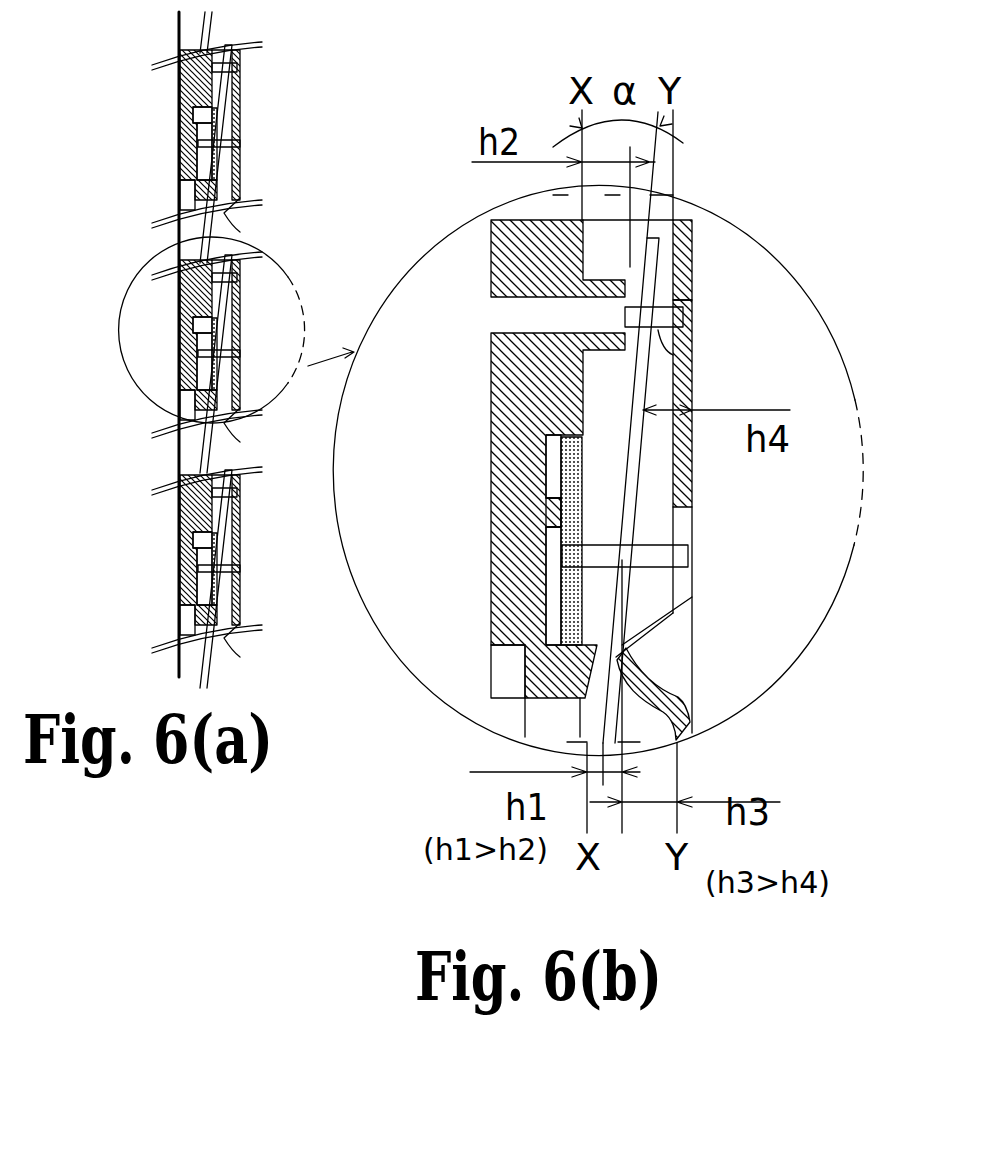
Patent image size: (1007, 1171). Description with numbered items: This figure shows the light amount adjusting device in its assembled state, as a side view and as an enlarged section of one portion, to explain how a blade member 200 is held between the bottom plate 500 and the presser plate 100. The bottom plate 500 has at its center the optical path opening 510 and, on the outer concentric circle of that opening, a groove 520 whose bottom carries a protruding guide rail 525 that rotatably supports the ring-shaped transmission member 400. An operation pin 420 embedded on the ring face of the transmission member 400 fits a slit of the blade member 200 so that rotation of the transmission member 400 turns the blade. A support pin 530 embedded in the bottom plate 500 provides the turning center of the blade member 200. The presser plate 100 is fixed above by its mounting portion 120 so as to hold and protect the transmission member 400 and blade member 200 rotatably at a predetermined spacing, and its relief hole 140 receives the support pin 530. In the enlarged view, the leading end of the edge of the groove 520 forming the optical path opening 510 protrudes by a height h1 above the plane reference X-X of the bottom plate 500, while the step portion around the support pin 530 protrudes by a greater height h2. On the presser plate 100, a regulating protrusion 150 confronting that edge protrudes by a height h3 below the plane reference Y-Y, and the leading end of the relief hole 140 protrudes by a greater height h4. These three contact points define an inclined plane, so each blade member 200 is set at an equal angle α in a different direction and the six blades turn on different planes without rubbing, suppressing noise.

In FIG. 6A, the presser plate 100 is at (240, 80).
In FIG. 6B, the presser plate 100 is at (690, 347).
In FIG. 6B, the mounting portion 120 is at (673, 195).
In FIG. 6B, the relief hole 140 is at (693, 287).
In FIG. 6B, the regulating protrusion 150 is at (650, 663).
In FIG. 6A, the blade member 200 is at (228, 118).
In FIG. 6B, the blade member 200 is at (637, 453).
In FIG. 6A, the transmission member 400 is at (197, 140).
In FIG. 6B, the transmission member 400 is at (556, 580).
In FIG. 6B, the operation pin 420 is at (663, 557).
In FIG. 6A, the bottom plate 500 is at (195, 88).
In FIG. 6B, the bottom plate 500 is at (525, 256).
In FIG. 6B, the optical path opening 510 is at (508, 700).
In FIG. 6B, the groove 520 is at (552, 457).
In FIG. 6B, the guide rail 525 is at (557, 513).
In FIG. 6B, the support pin 530 is at (608, 313).